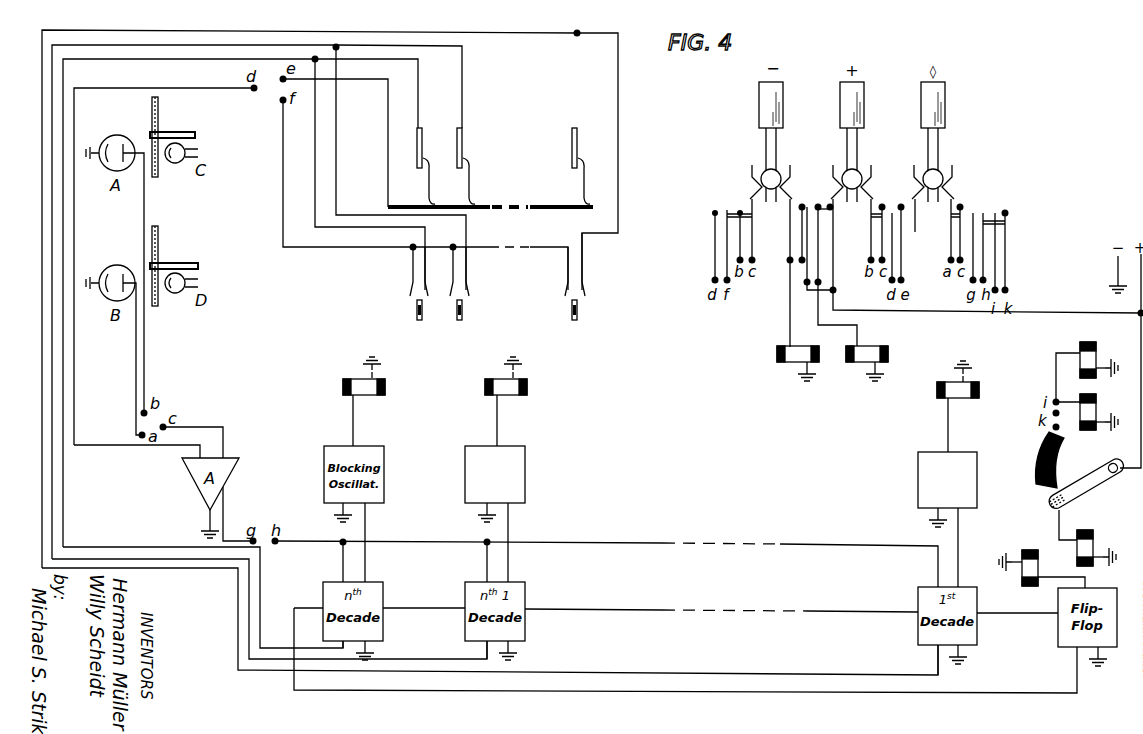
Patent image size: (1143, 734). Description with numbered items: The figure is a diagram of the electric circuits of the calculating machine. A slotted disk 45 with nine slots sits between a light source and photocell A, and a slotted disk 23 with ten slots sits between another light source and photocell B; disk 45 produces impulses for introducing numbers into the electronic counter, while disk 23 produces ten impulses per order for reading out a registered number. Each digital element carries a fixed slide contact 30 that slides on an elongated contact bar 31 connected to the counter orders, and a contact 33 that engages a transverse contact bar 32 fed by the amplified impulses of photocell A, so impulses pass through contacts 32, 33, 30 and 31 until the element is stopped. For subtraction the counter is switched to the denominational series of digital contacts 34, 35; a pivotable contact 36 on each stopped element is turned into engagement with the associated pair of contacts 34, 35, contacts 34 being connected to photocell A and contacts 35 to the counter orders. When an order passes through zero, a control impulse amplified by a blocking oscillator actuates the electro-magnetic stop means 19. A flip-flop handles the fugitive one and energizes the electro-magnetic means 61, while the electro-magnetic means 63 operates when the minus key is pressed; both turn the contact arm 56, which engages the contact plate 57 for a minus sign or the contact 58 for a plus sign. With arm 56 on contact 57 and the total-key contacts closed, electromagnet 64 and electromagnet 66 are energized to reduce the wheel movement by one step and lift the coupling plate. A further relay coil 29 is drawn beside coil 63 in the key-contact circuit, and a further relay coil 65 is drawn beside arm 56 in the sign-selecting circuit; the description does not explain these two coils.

The electro-magnetic stop means 19 is at (372, 395).
The slotted disk 23 is at (162, 250).
The relay coil 29 is at (876, 349).
The slide contact 30 is at (586, 178).
The elongated contact bar 31 is at (580, 142).
The transverse contact bar 32 is at (552, 205).
The contact 33 is at (484, 205).
The digital contact 34 is at (412, 276).
The digital contact 35 is at (467, 276).
The pivotable contact 36 is at (590, 316).
The slotted disk 45 is at (162, 120).
The contact arm 56 is at (1116, 477).
The contact plate 57 is at (1066, 450).
The contact 58 is at (1070, 506).
The electro-magnetic means 61 is at (1037, 567).
The electro-magnetic means 63 is at (777, 350).
The electromagnet 64 is at (1092, 410).
The relay coil 65 is at (1093, 541).
The electromagnet 66 is at (1092, 352).